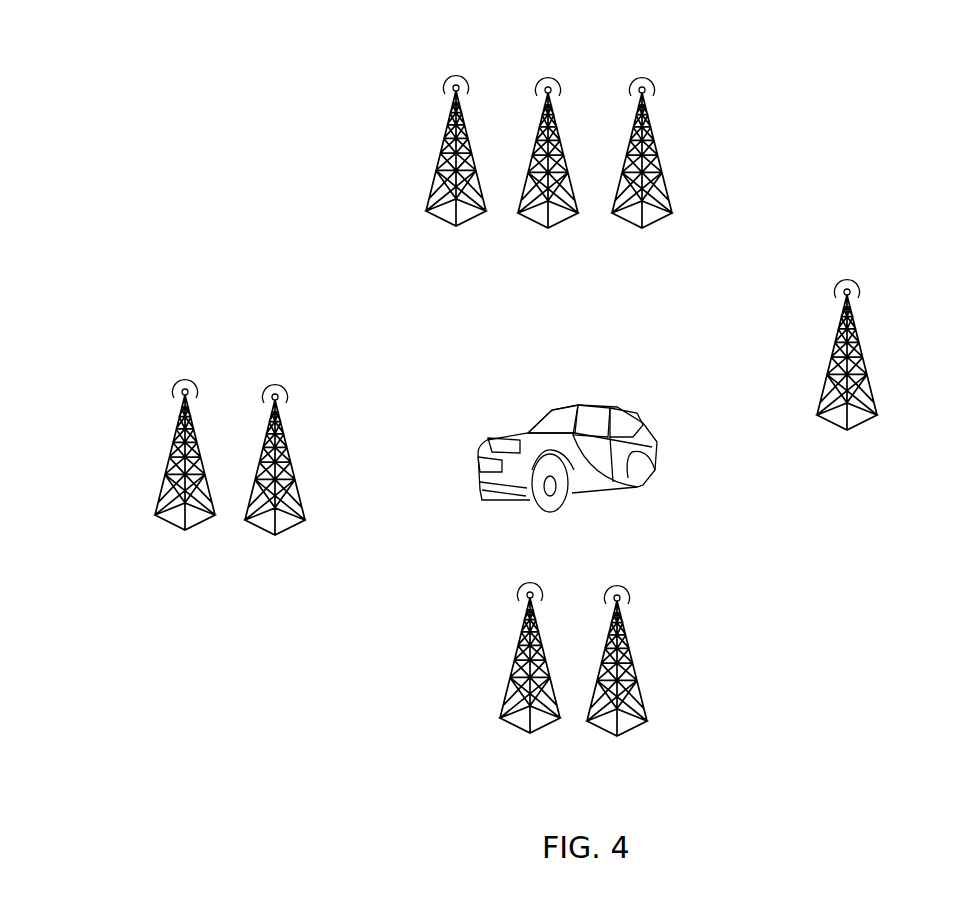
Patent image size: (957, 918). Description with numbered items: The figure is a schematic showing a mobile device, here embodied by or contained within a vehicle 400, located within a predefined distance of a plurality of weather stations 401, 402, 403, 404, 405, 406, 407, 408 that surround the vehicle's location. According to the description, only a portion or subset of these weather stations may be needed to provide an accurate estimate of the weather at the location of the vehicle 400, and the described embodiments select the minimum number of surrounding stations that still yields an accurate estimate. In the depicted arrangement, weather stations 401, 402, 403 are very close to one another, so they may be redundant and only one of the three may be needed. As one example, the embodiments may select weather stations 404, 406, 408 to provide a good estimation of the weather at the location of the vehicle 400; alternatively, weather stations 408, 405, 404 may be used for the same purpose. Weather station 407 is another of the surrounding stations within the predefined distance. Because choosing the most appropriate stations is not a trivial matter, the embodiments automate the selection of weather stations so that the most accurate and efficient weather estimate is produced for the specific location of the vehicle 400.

The vehicle 400 is at (625, 410).
The weather station 401 is at (457, 74).
The weather station 402 is at (549, 76).
The weather station 403 is at (643, 76).
The weather station 404 is at (848, 278).
The weather station 405 is at (618, 584).
The weather station 406 is at (531, 581).
The weather station 407 is at (186, 378).
The weather station 408 is at (276, 383).